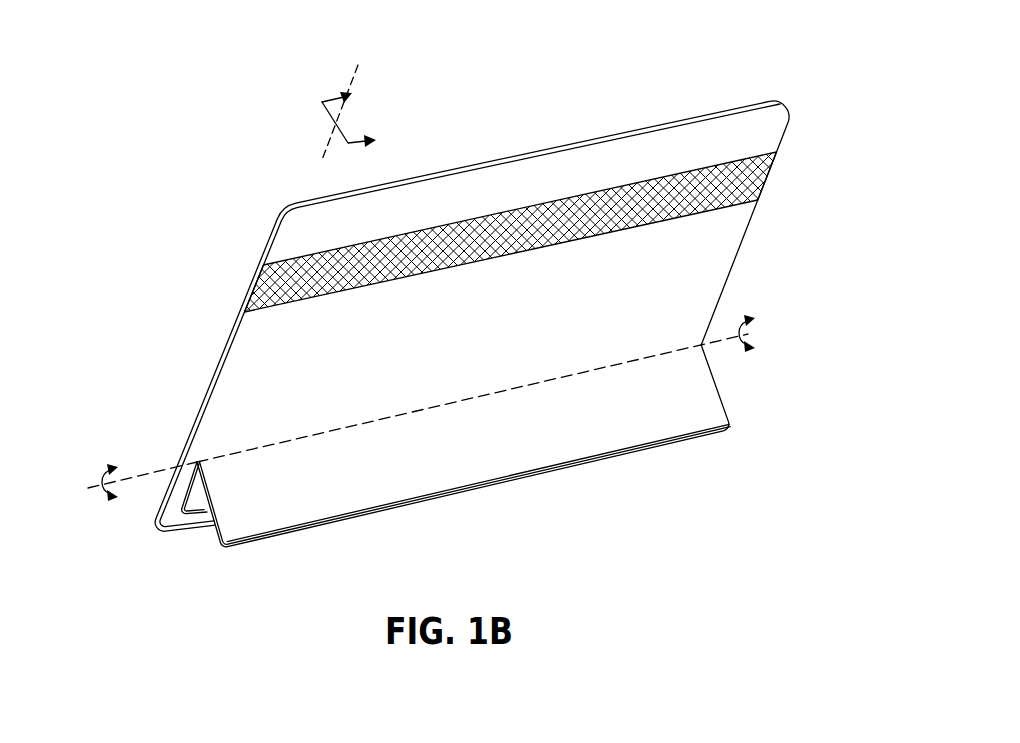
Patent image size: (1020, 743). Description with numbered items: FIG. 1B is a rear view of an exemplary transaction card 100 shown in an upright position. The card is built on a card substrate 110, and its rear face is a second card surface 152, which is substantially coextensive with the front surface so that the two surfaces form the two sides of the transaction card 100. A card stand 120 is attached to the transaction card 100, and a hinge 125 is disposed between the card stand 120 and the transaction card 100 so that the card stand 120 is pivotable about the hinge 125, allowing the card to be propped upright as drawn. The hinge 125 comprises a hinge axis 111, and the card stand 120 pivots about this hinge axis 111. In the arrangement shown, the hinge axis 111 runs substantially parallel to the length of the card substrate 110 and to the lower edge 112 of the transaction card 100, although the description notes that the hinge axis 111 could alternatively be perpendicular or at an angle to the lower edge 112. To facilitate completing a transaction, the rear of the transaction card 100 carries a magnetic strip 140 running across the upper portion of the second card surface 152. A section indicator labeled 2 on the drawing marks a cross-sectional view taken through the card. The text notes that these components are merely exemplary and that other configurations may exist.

The section line 2- 2 is at (344, 110).
The transaction card 100 is at (256, 229).
The card substrate 110 is at (773, 103).
The hinge axis 111 is at (167, 468).
The lower edge 112 is at (190, 531).
The card stand 120 is at (713, 437).
The hinge 125 is at (540, 380).
The magnetic strip 140 is at (758, 200).
The second card surface 152 is at (700, 243).